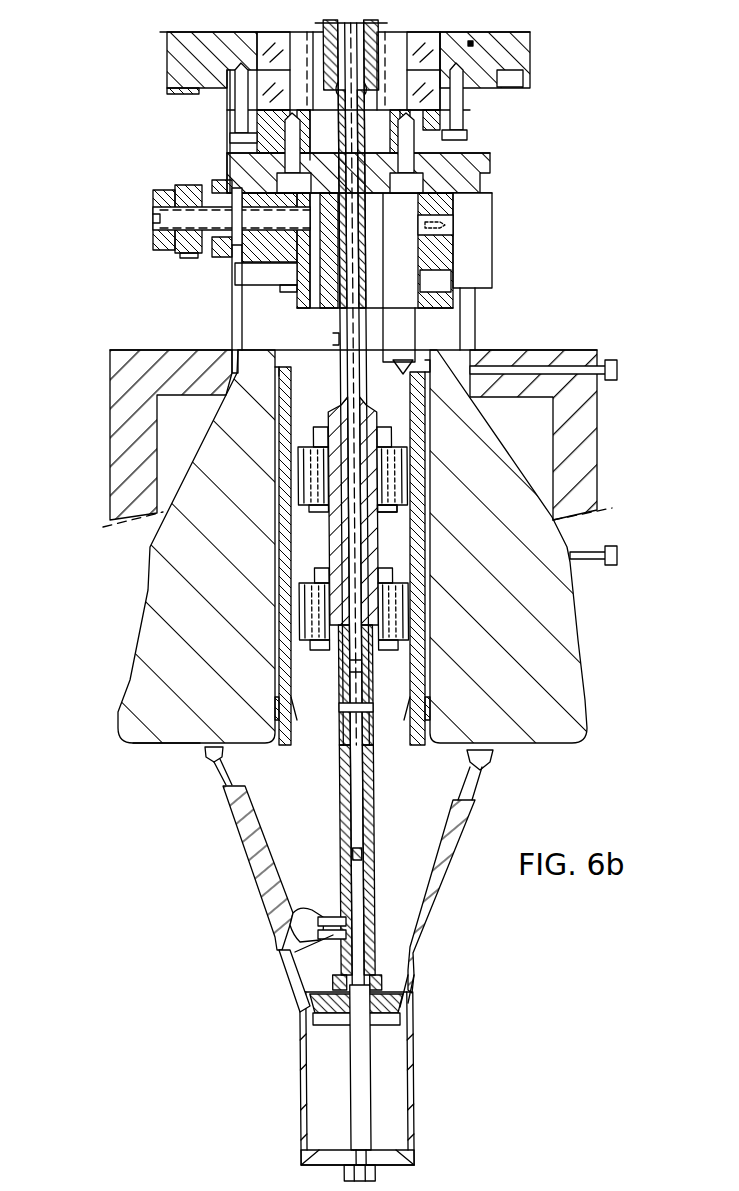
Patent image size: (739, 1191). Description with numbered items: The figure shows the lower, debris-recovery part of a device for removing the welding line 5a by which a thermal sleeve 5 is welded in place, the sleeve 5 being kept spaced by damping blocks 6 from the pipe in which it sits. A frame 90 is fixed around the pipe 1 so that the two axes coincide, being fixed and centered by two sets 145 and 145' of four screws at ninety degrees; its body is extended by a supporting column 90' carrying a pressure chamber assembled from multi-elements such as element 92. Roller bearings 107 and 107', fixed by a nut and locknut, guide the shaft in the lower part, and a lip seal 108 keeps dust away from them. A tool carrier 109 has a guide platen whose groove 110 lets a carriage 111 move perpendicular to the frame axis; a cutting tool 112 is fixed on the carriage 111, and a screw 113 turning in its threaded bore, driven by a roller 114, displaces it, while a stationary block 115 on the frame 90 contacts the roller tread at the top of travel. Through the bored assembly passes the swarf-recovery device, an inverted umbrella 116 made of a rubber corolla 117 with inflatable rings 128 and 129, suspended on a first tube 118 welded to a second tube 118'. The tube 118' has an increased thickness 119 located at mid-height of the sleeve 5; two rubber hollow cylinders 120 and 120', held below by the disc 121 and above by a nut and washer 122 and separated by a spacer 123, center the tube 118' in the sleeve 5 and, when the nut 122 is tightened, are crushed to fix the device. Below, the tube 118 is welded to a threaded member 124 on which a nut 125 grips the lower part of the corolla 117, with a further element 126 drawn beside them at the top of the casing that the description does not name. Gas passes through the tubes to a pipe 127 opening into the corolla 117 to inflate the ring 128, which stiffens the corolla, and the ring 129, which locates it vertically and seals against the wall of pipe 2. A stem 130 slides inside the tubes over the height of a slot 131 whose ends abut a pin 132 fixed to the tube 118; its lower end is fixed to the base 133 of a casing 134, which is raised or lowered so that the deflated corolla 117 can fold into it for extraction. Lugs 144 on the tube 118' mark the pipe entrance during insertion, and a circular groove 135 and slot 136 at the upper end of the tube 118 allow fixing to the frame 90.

The pipe 1 is at (270, 590).
The pipe 2 is at (155, 752).
The thermal sleeve 5 is at (425, 428).
The welding line 5a is at (455, 385).
The damping block 6 is at (428, 712).
The frame 90 is at (324, 438).
The supporting column 90' is at (493, 319).
The multi-element 92 is at (523, 80).
The roller bearing 107 is at (323, 112).
The roller bearing 107' is at (326, 96).
The lip seal 108 is at (280, 145).
The tool carrier 109 is at (480, 174).
The groove 110 is at (480, 210).
The carriage 111 is at (445, 243).
The cutting tool 112 is at (408, 343).
The screw 113 is at (242, 222).
The roller 114 is at (185, 242).
The stationary block 115 is at (175, 92).
The inverted umbrella 116 is at (535, 966).
The corolla 117 is at (268, 922).
The first tube 118 is at (329, 867).
The second tube 118' is at (307, 552).
The increased thickness 119 is at (393, 570).
The hollow cylinder 120 is at (275, 469).
The hollow cylinder 120' is at (386, 609).
The disc 121 is at (380, 656).
The nut and washer 122 is at (400, 455).
The spacer 123 is at (400, 510).
The member 124 is at (370, 1025).
The nut 125 is at (402, 1006).
The retaining ring 126 is at (400, 1020).
The pipe 127 is at (292, 978).
The inflatable ring 128 is at (252, 855).
The inflatable ring 129 is at (212, 772).
The stem 130 is at (332, 85).
The slot 131 is at (362, 812).
The pin 132 is at (340, 706).
The base 133 is at (405, 1157).
The casing 134 is at (298, 1070).
The circular groove 135 is at (445, 100).
The slot 136 is at (352, 47).
The lug 144 is at (333, 340).
The set of screws 145 is at (565, 354).
The set of screws 145' is at (617, 541).